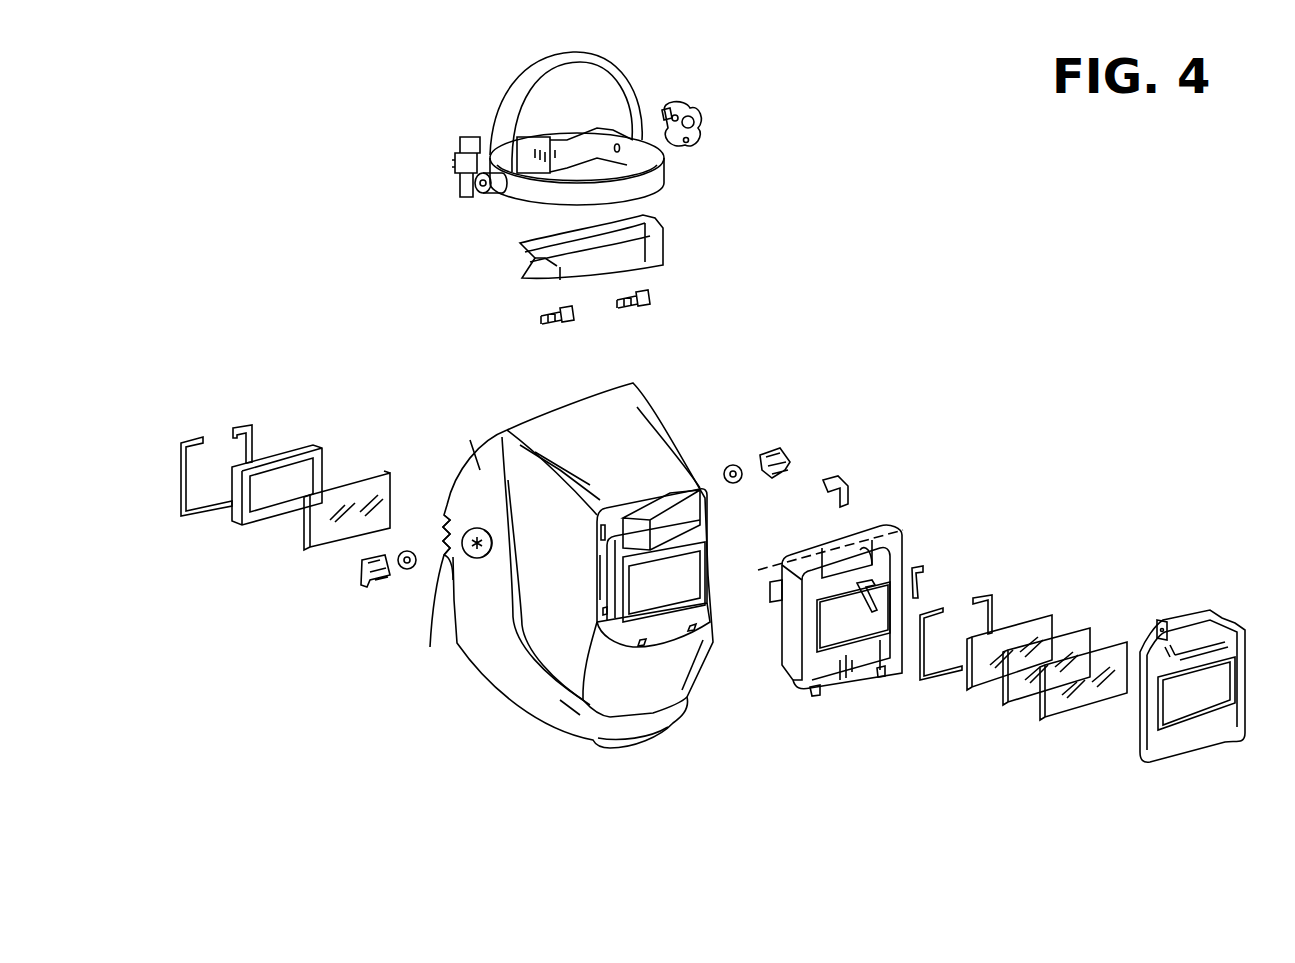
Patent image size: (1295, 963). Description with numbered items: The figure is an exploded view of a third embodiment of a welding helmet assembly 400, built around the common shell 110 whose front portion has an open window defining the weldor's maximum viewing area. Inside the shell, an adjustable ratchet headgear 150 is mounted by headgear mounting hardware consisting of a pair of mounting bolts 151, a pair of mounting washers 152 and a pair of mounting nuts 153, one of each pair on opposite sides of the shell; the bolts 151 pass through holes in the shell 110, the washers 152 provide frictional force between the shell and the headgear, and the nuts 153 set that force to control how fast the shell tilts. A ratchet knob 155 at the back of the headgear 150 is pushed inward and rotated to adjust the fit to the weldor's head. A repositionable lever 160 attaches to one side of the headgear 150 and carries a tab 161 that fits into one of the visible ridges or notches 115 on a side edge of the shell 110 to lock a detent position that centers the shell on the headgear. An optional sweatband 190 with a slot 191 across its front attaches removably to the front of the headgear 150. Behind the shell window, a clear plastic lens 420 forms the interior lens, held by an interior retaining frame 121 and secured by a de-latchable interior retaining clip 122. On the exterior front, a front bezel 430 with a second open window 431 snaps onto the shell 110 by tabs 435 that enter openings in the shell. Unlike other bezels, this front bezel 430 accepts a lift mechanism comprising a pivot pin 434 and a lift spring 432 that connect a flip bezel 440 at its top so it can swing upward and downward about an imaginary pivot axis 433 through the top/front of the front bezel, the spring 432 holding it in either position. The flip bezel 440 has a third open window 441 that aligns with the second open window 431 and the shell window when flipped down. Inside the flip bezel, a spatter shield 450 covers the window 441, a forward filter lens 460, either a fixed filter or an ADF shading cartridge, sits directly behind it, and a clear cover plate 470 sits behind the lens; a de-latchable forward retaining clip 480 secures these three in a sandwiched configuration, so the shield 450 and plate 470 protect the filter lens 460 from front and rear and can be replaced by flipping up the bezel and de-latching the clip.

The welding helmet assembly 400 is at (1015, 248).
The common shell 110 is at (637, 407).
The visible ridges or notches 115 is at (427, 597).
The interior retaining frame 121 is at (312, 442).
The interior retaining clip 122 is at (242, 428).
The ratchet headgear 150 is at (543, 53).
The mounting bolts 151 is at (630, 313).
The mounting washers 152 is at (405, 575).
The mounting nuts 153 is at (362, 575).
The ratchet knob 155 is at (462, 147).
The repositionable lever 160 is at (695, 108).
The tab 161 is at (660, 113).
The sweatband 190 is at (628, 268).
The slot 191 is at (557, 268).
The clear plastic lens 420 is at (385, 478).
The front bezel 430 is at (862, 535).
The second open window 431 is at (872, 615).
The lift spring 432 is at (840, 487).
The imaginary pivot axis 433 is at (900, 528).
The pivot pin 434 is at (872, 582).
The tabs 435 is at (875, 673).
The flip bezel 440 is at (1228, 628).
The third open window 441 is at (1200, 697).
The spatter shield 450 is at (1115, 645).
The forward filter lens 460 is at (1067, 635).
The clear cover plate 470 is at (1008, 632).
The forward retaining clip 480 is at (980, 597).